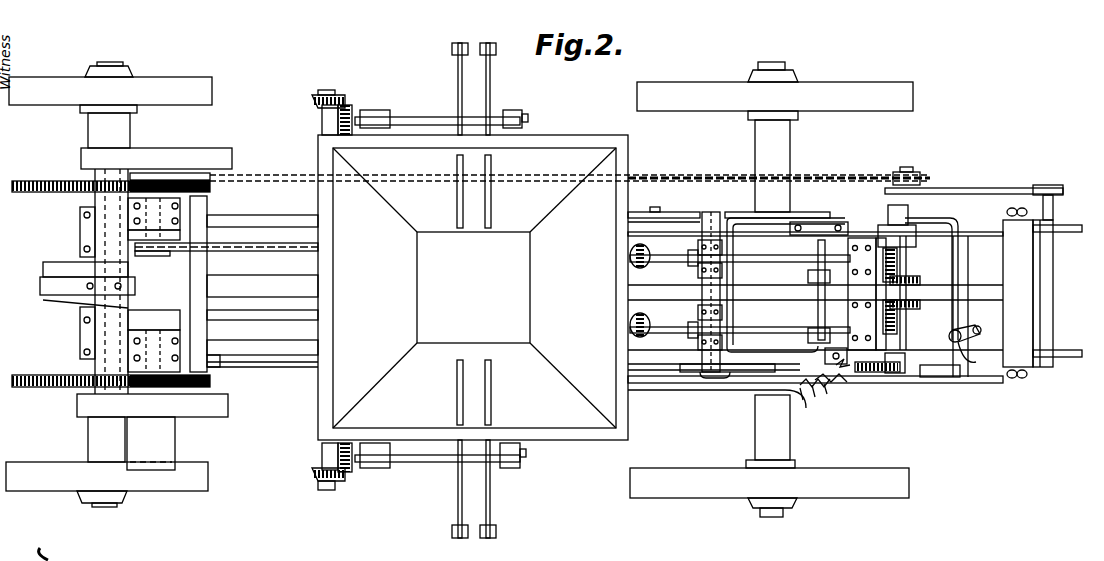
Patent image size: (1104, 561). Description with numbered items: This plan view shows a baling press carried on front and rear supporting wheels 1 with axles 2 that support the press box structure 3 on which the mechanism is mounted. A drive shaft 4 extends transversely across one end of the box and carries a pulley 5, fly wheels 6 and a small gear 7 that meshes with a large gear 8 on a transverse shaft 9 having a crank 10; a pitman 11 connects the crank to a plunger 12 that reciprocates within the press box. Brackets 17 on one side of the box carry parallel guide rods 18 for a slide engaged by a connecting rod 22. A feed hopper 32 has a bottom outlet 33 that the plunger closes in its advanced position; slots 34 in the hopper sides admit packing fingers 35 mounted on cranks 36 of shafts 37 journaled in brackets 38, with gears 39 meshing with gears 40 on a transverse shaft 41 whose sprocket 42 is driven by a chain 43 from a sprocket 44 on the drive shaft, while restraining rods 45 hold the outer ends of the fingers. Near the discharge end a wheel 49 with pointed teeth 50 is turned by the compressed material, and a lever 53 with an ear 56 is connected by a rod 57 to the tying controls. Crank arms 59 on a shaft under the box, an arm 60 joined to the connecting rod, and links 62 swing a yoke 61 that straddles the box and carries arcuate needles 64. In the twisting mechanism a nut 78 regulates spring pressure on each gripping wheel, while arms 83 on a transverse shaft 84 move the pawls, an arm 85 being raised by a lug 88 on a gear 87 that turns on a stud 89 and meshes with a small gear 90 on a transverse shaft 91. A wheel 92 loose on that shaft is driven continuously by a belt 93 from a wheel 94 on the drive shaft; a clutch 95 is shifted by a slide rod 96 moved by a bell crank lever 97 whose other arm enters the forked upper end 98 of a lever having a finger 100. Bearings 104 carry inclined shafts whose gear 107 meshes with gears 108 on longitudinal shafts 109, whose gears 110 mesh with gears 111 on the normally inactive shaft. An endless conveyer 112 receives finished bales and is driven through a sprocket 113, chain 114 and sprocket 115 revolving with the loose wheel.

The supporting wheels 1 is at (190, 97).
The axles 2 is at (112, 66).
The press box structure 3 is at (260, 235).
The drive shaft 4 is at (188, 300).
The pulley 5 is at (168, 452).
The fly wheels 6 is at (125, 160).
The small gear 7 is at (175, 180).
The large gear 8 is at (50, 183).
The transverse shaft 9 is at (100, 232).
The crank 10 is at (57, 305).
The pitman 11 is at (322, 286).
The plunger 12 is at (320, 321).
The brackets 17 is at (210, 370).
The guide rods 18 is at (288, 368).
The connecting rod 22 is at (728, 385).
The feed hopper 32 is at (318, 410).
The outlet 33 is at (530, 280).
The slots 34 is at (463, 225).
The packing fingers 35 is at (485, 198).
The cranks 36 is at (487, 120).
The shaft 37 is at (425, 118).
The brackets 38 is at (370, 114).
The gears 39 is at (340, 118).
The gears 40 is at (314, 103).
The transverse shaft 41 is at (322, 447).
The sprocket 42 is at (320, 248).
The chain 43 is at (228, 243).
The sprocket 44 is at (160, 253).
The restraining rods 45 is at (466, 44).
The wheel 49 is at (828, 392).
The pointed teeth 50 is at (810, 398).
The lever 53 is at (842, 354).
The ear 56 is at (848, 372).
The rod 57 is at (688, 385).
The crank arm 59 is at (643, 214).
The arm 60 is at (750, 388).
The yoke 61 is at (772, 216).
The links 62 is at (700, 216).
The arcuate needles 64 is at (668, 320).
The nut 78 is at (740, 345).
The arms 83 is at (808, 277).
The transverse shaft 84 is at (816, 299).
The arm 85 is at (901, 317).
The gear 87 is at (866, 375).
The lug 88 is at (860, 412).
The stud 89 is at (876, 385).
The small gear 90 is at (896, 376).
The transverse shaft 91 is at (902, 276).
The wheel 92 is at (922, 178).
The belt 93 is at (570, 169).
The wheel 94 is at (160, 172).
The clutch 95 is at (882, 218).
The slide rod 96 is at (938, 218).
The bell crank lever 97 is at (965, 330).
The forked upper end 98 is at (972, 368).
The finger 100 is at (942, 377).
The bearings 104 is at (665, 268).
The gear 107 is at (640, 257).
The gears 108 is at (690, 252).
The longitudinal shafts 109 is at (755, 262).
The gears 110 is at (875, 320).
The gears 111 is at (905, 325).
The endless conveyer 112 is at (1072, 228).
The sprocket 113 is at (1065, 180).
The chain 114 is at (978, 187).
The sprocket 115 is at (928, 191).